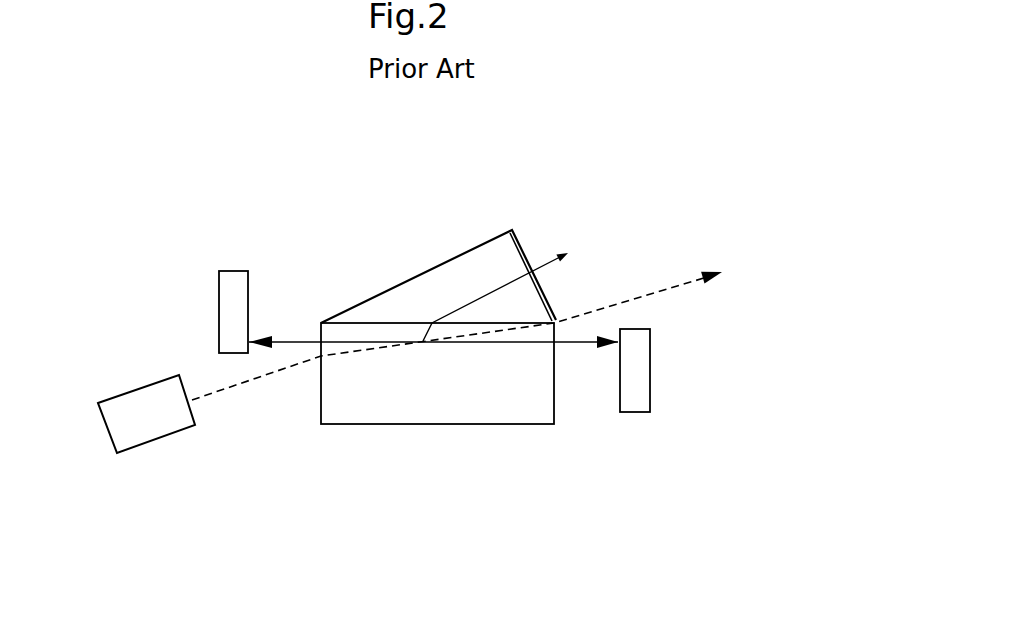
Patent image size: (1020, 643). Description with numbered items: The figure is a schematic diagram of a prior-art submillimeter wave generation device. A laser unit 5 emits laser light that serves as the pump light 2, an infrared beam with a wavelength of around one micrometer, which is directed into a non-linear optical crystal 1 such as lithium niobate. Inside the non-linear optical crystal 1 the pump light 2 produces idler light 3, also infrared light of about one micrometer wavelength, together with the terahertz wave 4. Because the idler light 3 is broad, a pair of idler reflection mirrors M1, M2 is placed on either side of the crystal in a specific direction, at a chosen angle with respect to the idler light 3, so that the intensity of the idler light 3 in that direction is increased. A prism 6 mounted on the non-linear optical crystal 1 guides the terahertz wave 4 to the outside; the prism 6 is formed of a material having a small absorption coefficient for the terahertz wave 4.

The non-linear optical crystal 1 is at (407, 407).
The pump light 2 is at (242, 387).
The idler light 3 is at (288, 340).
The terahertz wave 4 is at (565, 251).
The laser unit 5 is at (128, 406).
The prism 6 is at (448, 278).
The idler reflection mirror M1 is at (210, 312).
The idler reflection mirror M2 is at (657, 370).